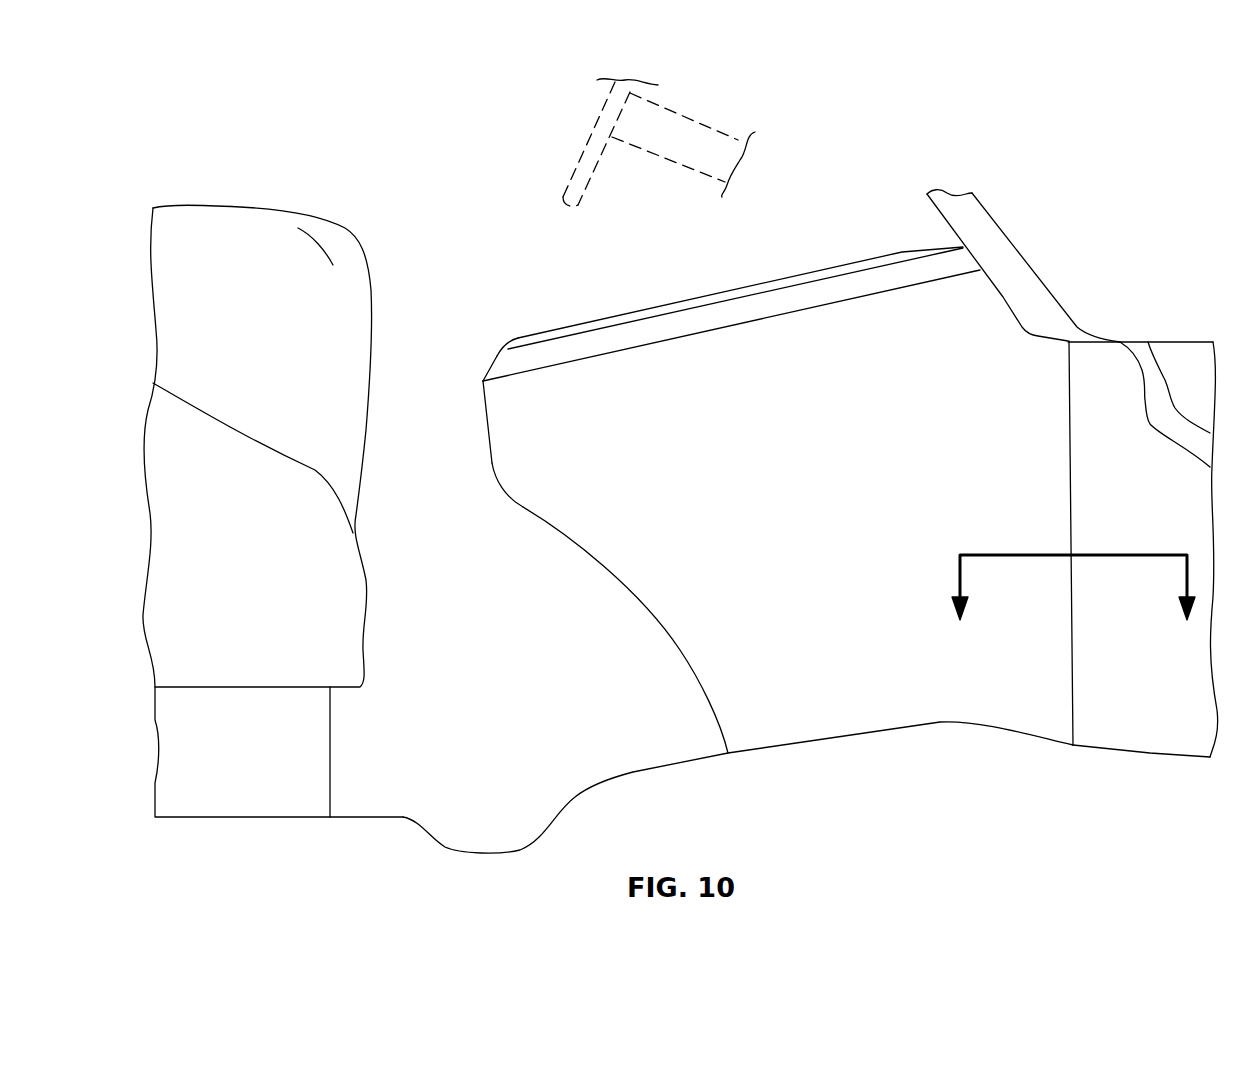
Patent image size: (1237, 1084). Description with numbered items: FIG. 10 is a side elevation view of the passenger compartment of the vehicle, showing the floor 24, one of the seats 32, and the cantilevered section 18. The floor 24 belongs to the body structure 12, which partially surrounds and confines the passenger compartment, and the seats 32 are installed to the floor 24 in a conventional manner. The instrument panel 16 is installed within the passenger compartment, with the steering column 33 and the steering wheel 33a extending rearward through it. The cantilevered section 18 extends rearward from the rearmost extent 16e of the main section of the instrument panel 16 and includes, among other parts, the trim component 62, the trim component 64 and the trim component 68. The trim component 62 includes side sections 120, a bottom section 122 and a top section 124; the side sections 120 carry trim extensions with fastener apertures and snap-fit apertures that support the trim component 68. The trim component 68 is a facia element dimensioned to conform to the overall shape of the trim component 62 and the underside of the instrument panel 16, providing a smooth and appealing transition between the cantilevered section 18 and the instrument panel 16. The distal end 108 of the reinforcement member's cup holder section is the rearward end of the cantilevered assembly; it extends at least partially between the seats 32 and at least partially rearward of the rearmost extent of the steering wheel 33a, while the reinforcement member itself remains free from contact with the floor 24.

The body structure 12 is at (1073, 599).
The instrument panel 16 is at (985, 266).
The rearmost extent of the main section of the instrument panel 16e is at (934, 211).
The cantilevered section 18 is at (735, 286).
The floor 24 is at (603, 782).
The seats 32 is at (358, 255).
The steering column 33 is at (708, 127).
The steering wheel 33a is at (583, 148).
The trim component 62 is at (492, 463).
The trim component 64 is at (633, 310).
The trim component 68 is at (1090, 651).
The distal end 108 is at (483, 381).
The side sections 120 is at (704, 670).
The bottom section 122 is at (527, 508).
The top section 124 is at (497, 356).